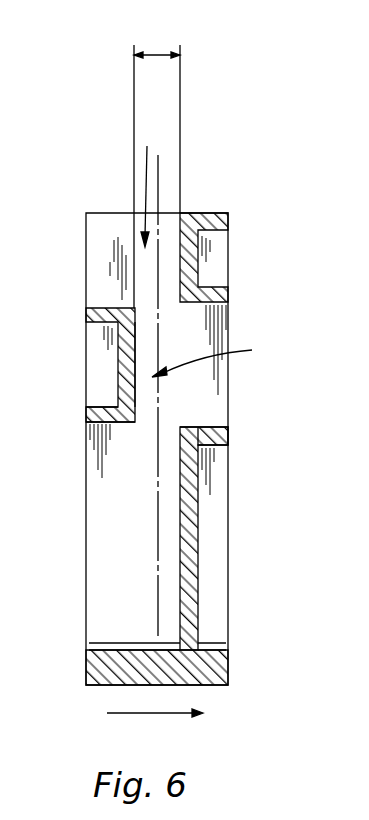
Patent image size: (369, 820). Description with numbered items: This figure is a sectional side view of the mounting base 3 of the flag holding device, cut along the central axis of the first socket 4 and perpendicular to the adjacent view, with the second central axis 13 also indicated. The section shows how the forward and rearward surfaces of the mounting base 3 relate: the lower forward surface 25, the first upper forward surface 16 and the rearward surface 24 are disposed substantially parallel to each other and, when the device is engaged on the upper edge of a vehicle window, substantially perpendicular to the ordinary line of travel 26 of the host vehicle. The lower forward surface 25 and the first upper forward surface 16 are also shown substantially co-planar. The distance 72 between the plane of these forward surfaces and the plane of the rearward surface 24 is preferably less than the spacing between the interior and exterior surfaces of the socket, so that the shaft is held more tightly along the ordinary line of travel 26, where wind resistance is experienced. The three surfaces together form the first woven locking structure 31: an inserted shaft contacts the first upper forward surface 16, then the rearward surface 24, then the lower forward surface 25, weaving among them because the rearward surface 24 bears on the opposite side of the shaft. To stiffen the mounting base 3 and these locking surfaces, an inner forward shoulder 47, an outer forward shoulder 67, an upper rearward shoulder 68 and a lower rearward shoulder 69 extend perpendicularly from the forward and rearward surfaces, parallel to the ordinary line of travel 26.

The mounting base 3 is at (104, 626).
The first socket 4 is at (147, 182).
The second central axis 13 is at (158, 164).
The first upper forward surface 16 is at (180, 278).
The rearward surface 24 is at (134, 408).
The lower forward surface 25 is at (180, 543).
The ordinary line of travel 26 is at (153, 714).
The first woven locking structure 31 is at (217, 356).
The inner forward shoulder 47 is at (228, 298).
The outer forward shoulder 67 is at (225, 222).
The upper rearward shoulder 68 is at (86, 313).
The lower rearward shoulder 69 is at (88, 415).
The distance 72 is at (158, 54).